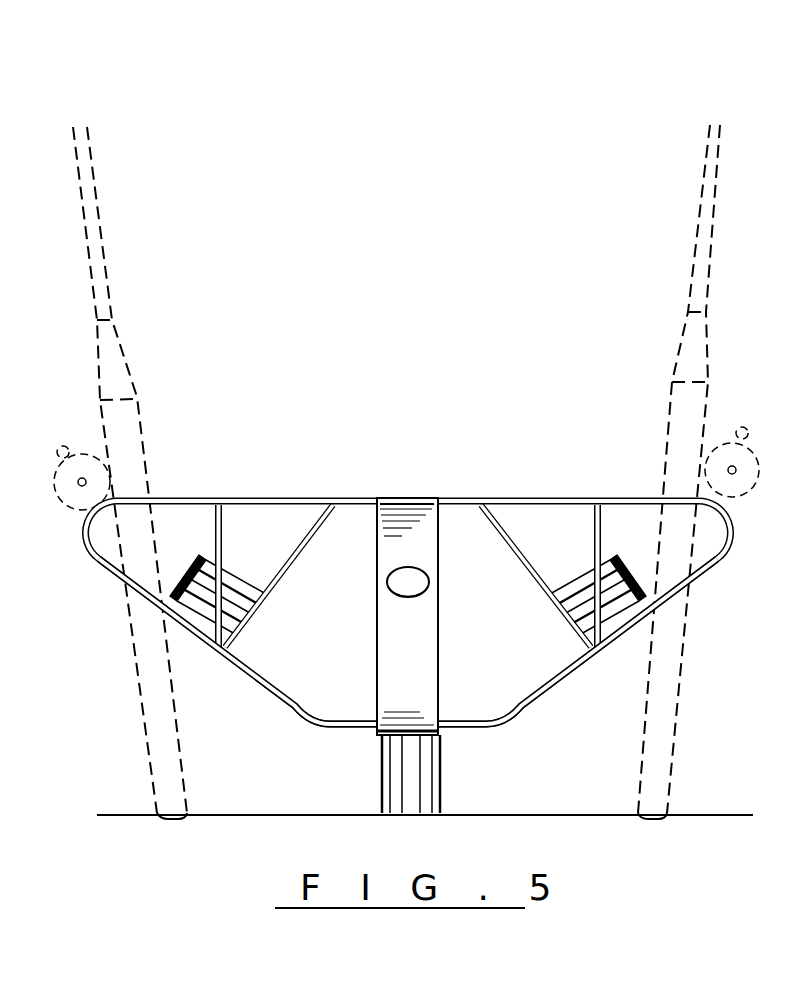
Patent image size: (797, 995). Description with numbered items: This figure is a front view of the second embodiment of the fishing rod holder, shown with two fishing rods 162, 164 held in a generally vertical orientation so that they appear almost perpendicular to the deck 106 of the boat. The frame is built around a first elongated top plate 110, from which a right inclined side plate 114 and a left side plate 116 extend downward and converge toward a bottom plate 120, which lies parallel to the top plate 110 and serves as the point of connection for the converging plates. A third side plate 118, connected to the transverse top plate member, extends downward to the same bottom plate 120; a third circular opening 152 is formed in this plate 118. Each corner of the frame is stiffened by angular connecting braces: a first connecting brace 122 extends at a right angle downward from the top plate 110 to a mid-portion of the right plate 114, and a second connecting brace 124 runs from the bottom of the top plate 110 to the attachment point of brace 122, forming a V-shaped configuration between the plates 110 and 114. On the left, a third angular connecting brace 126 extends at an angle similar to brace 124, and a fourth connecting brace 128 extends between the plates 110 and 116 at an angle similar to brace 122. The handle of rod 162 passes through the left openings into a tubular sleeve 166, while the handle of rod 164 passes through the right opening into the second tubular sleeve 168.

The deck 106 is at (713, 816).
The first elongated top plate 110 is at (519, 497).
The right inclined side plate 114 is at (570, 677).
The left side plate 116 is at (268, 690).
The third side plate 118 is at (418, 658).
The bottom plate 120 is at (484, 729).
The first connecting brace 122 is at (602, 528).
The second connecting brace 124 is at (512, 534).
The third angular connecting brace 126 is at (288, 573).
The fourth connecting brace 128 is at (222, 535).
The third circular opening 152 is at (412, 582).
The fishing rod 162 is at (103, 248).
The fishing rod 164 is at (716, 243).
The tubular sleeve 166 is at (238, 580).
The second tubular sleeve 168 is at (548, 580).